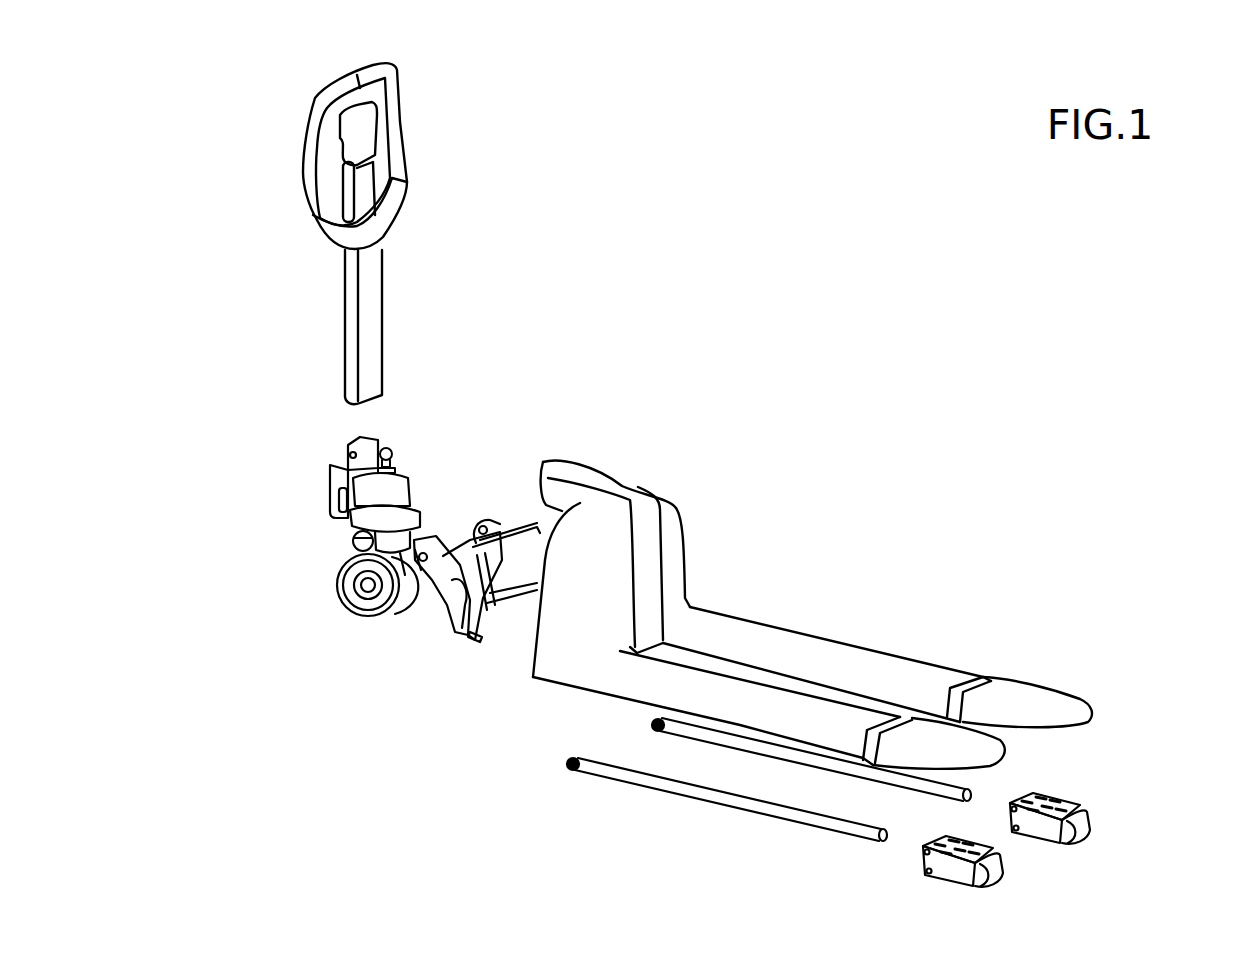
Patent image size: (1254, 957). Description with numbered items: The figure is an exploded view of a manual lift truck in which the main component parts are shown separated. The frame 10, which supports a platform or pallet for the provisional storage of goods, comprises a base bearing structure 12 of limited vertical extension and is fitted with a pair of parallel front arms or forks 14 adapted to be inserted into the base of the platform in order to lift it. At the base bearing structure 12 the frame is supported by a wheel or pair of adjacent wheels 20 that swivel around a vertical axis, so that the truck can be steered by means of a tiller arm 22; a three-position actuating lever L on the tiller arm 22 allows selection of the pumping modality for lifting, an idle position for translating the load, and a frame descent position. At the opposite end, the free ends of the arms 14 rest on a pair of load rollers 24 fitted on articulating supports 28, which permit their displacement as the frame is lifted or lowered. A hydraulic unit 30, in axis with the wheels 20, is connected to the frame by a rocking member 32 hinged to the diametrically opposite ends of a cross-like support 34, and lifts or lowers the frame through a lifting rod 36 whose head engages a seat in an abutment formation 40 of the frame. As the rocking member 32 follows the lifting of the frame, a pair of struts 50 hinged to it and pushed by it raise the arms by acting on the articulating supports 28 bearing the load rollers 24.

The frame 10 is at (780, 566).
The base bearing structure 12 is at (703, 564).
The front arms or forks 14 is at (900, 633).
The wheels 20 is at (336, 610).
The tiller arm 22 is at (440, 233).
The load rollers 24 is at (986, 784).
The articulating supports 28 is at (1098, 776).
The hydraulic unit 30 is at (343, 544).
The rocking member 32 is at (445, 637).
The cross-like support 34 is at (352, 543).
The lifting rod 36 is at (386, 447).
The abutment formation 40 is at (578, 478).
The struts 50 is at (721, 739).
The three-position actuating lever L is at (363, 137).